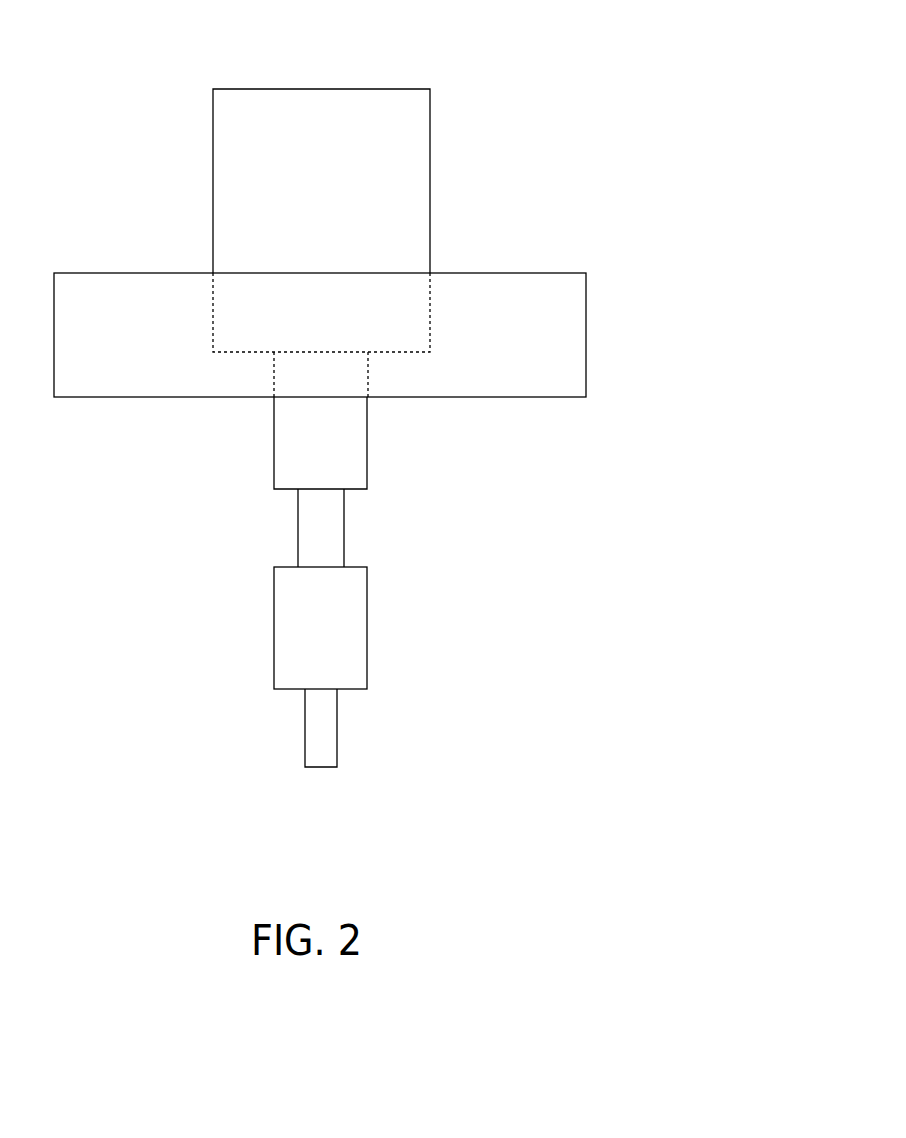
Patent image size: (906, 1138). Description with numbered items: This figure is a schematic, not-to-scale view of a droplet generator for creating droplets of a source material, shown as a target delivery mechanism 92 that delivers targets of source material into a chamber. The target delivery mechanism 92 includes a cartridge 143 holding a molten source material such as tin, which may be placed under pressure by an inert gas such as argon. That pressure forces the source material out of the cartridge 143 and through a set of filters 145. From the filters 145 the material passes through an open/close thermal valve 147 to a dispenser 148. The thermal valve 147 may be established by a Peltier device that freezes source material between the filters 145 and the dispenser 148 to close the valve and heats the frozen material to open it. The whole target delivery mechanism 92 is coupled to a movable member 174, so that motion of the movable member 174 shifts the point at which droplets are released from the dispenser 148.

The target delivery mechanism 92 is at (482, 125).
The cartridge 143 is at (415, 242).
The movable member 174 is at (554, 337).
The set of filters 145 is at (352, 475).
The open/close thermal valve 147 is at (336, 613).
The dispenser 148 is at (320, 751).